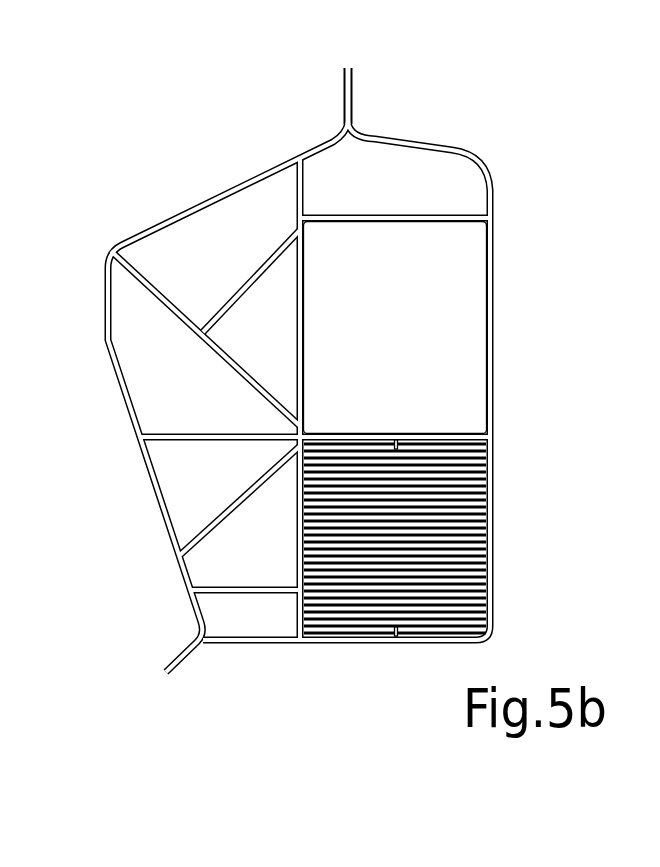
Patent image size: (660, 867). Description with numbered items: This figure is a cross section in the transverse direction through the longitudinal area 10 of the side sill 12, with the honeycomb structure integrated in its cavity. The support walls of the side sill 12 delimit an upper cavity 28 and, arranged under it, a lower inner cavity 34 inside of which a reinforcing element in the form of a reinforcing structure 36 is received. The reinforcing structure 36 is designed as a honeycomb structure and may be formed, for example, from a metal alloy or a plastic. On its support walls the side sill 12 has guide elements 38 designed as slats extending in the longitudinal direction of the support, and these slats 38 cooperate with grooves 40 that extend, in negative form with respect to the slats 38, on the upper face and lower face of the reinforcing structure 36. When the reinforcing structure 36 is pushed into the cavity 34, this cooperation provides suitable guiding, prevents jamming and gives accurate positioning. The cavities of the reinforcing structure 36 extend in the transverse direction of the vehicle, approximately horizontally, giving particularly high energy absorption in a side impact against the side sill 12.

The longitudinal portion 10 is at (359, 394).
The side sill 12 is at (525, 179).
The upper cavity 28 is at (378, 341).
The lower inner cavity 34 is at (440, 557).
The reinforcing structure 36 is at (365, 603).
The guide elements 38 is at (453, 525).
The grooves 40 is at (411, 435).